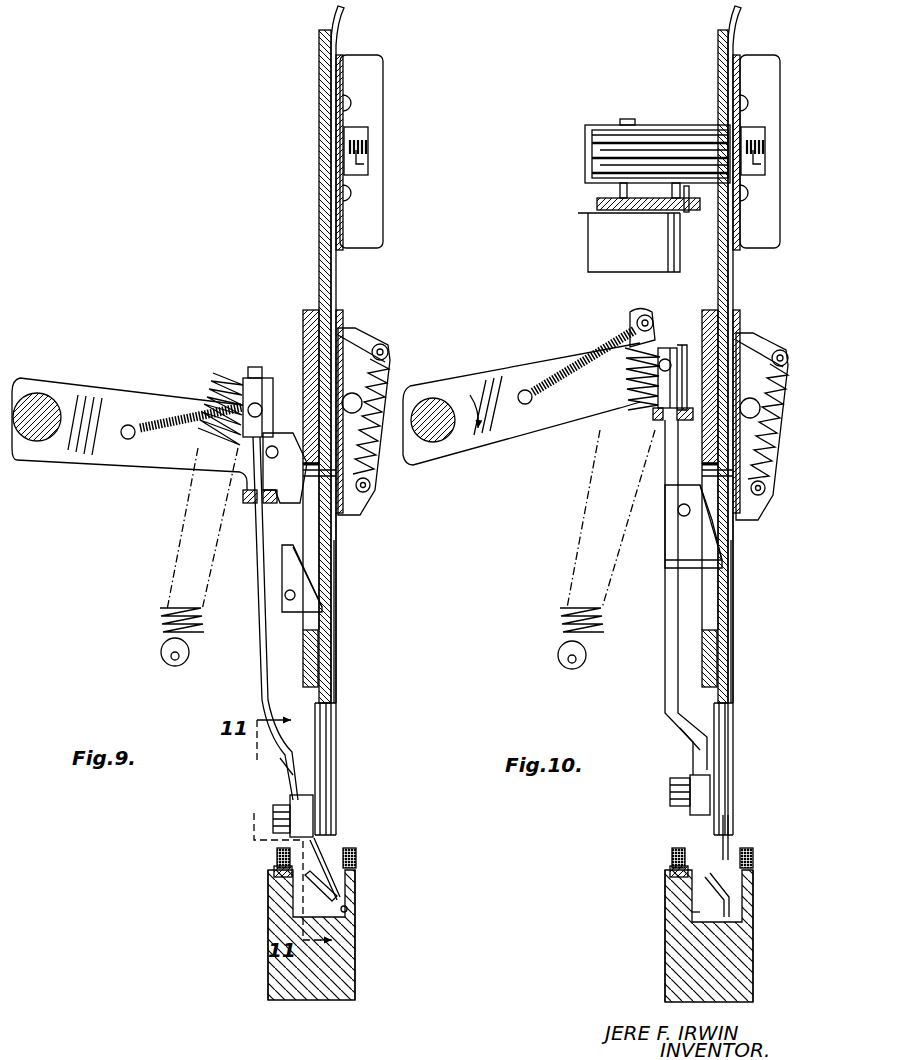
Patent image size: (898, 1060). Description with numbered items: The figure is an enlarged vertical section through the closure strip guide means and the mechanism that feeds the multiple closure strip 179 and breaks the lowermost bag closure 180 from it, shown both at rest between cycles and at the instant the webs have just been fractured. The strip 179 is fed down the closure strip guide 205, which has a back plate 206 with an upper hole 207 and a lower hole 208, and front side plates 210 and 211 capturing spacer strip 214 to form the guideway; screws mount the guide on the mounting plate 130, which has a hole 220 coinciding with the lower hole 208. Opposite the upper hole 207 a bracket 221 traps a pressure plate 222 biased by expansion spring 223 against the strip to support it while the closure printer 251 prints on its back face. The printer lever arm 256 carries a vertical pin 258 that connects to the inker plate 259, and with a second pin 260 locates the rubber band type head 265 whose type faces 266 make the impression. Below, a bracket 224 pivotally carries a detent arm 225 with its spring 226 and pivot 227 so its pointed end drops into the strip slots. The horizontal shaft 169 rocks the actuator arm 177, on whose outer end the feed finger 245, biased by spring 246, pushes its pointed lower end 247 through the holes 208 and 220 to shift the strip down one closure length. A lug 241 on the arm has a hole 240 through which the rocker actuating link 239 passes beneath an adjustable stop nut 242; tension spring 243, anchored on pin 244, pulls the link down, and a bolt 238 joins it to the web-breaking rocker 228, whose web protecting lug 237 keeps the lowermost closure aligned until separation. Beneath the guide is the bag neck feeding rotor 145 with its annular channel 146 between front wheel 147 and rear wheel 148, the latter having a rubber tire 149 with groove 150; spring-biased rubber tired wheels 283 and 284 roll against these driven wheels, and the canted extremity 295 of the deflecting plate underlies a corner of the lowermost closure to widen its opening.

In FIG. 9, the closure strip guide mounting plate 130 is at (303, 331).
In FIG. 10, the closure strip guide mounting plate 130 is at (704, 312).
In FIG. 9, the bag neck feeding rotor 145 is at (267, 975).
In FIG. 10, the bag neck feeding rotor 145 is at (664, 960).
In FIG. 9, the annular channel 146 is at (347, 911).
In FIG. 10, the annular channel 146 is at (695, 913).
In FIG. 9, the front wheel 147 is at (356, 888).
In FIG. 10, the front wheel 147 is at (753, 880).
In FIG. 9, the rear wheel 148 is at (272, 894).
In FIG. 10, the rear wheel 148 is at (670, 888).
In FIG. 9, the rubber tire 149 is at (275, 870).
In FIG. 10, the rubber tire 149 is at (671, 869).
In FIG. 9, the annular peripheral groove 150 is at (277, 855).
In FIG. 10, the annular peripheral groove 150 is at (673, 852).
In FIG. 9, the horizontal shaft 169 is at (42, 398).
In FIG. 10, the horizontal shaft 169 is at (440, 398).
In FIG. 9, the closure feeding and web-breaking actuator arm 177 is at (96, 398).
In FIG. 10, the closure feeding and web-breaking actuator arm 177 is at (503, 440).
In FIG. 9, the multiple closure strip 179 is at (346, 17).
In FIG. 10, the multiple closure strip 179 is at (727, 15).
In FIG. 9, the bag closure 180 is at (331, 628).
In FIG. 10, the bag closure 180 is at (729, 632).
In FIG. 9, the closure strip guide 205 is at (318, 56).
In FIG. 10, the closure strip guide 205 is at (717, 68).
In FIG. 9, the back plate 206 is at (331, 88).
In FIG. 10, the back plate 206 is at (728, 88).
In FIG. 9, the upper hole 207 is at (333, 113).
In FIG. 10, the upper hole 207 is at (722, 122).
In FIG. 9, the lower hole 208 is at (300, 628).
In FIG. 10, the lower hole 208 is at (708, 628).
In FIG. 9, the front side plate 210 is at (337, 676).
In FIG. 10, the front side plate 210 is at (734, 699).
In FIG. 9, the left side plate 211 is at (330, 756).
In FIG. 10, the left side plate 211 is at (729, 744).
In FIG. 9, the spacer strip 214 is at (327, 781).
In FIG. 10, the spacer strip 214 is at (723, 773).
In FIG. 9, the hole 220 is at (307, 462).
In FIG. 10, the hole 220 is at (718, 480).
In FIG. 9, the bracket 221 is at (383, 78).
In FIG. 10, the bracket 221 is at (752, 66).
In FIG. 9, the pressure plate 222 is at (368, 135).
In FIG. 10, the pressure plate 222 is at (742, 140).
In FIG. 9, the expansion spring 223 is at (362, 162).
In FIG. 10, the expansion spring 223 is at (748, 165).
In FIG. 9, the bracket 224 is at (353, 507).
In FIG. 10, the bracket 224 is at (742, 522).
In FIG. 9, the detent arm 225 is at (380, 318).
In FIG. 10, the detent arm 225 is at (768, 324).
In FIG. 9, the spring 226 is at (371, 480).
In FIG. 10, the spring 226 is at (766, 486).
In FIG. 9, the pivot 227 is at (382, 392).
In FIG. 10, the pivot 227 is at (780, 425).
In FIG. 9, the web-breaking rocker 228 is at (290, 770).
In FIG. 10, the web-breaking rocker 228 is at (690, 742).
In FIG. 9, the web protecting lug 237 is at (332, 848).
In FIG. 10, the web protecting lug 237 is at (720, 820).
In FIG. 9, the bolt 238 is at (273, 813).
In FIG. 10, the bolt 238 is at (672, 790).
In FIG. 9, the rocker actuating link 239 is at (262, 670).
In FIG. 10, the rocker actuating link 239 is at (672, 606).
In FIG. 9, the hole 240 is at (258, 512).
In FIG. 10, the hole 240 is at (667, 432).
In FIG. 9, the lug 241 is at (243, 490).
In FIG. 10, the lug 241 is at (665, 424).
In FIG. 9, the adjustable stop nut 242 is at (264, 380).
In FIG. 10, the adjustable stop nut 242 is at (657, 312).
In FIG. 9, the tension spring 243 is at (165, 614).
In FIG. 10, the tension spring 243 is at (562, 612).
In FIG. 9, the pin 244 is at (165, 660).
In FIG. 10, the pin 244 is at (568, 670).
In FIG. 9, the closure strip feed finger 245 is at (280, 554).
In FIG. 10, the closure strip feed finger 245 is at (668, 445).
In FIG. 9, the spring 246 is at (158, 410).
In FIG. 10, the spring 246 is at (612, 337).
In FIG. 9, the pointed lower end 247 is at (305, 612).
In FIG. 10, the pointed lower end 247 is at (735, 560).
In FIG. 10, the closure printer 251 is at (618, 114).
In FIG. 10, the arm 256 is at (597, 205).
In FIG. 10, the vertical pin 258 is at (620, 190).
In FIG. 10, the inker plate 259 is at (582, 216).
In FIG. 10, the pin 260 is at (688, 212).
In FIG. 10, the rubber band type head 265 is at (592, 133).
In FIG. 10, the type faces 266 is at (592, 176).
In FIG. 9, the rubber tired wheel 283 is at (262, 838).
In FIG. 10, the rubber tired wheel 283 is at (683, 850).
In FIG. 9, the rubber tired wheel 284 is at (356, 852).
In FIG. 10, the rubber tired wheel 284 is at (753, 852).
In FIG. 9, the extremity 295 is at (308, 880).
In FIG. 10, the extremity 295 is at (725, 890).